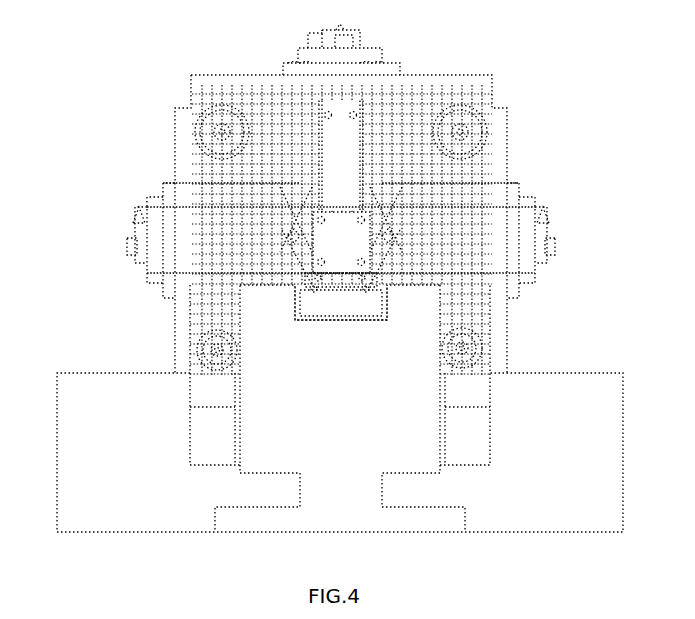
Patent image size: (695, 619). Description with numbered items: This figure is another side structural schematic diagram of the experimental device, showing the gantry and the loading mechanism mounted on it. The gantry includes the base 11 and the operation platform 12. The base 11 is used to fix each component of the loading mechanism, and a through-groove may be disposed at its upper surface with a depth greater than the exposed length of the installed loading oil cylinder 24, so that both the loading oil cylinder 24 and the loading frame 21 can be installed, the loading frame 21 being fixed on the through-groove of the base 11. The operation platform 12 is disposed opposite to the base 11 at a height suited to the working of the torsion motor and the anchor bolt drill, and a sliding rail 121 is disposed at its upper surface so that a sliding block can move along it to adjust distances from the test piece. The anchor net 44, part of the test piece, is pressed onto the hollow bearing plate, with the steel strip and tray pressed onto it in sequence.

The base 11 is at (70, 450).
The operation platform 12 is at (325, 508).
The sliding rail 121 is at (347, 312).
The loading frame 21 is at (462, 74).
The loading oil cylinder 24 is at (373, 48).
The anchor net 44 is at (475, 183).